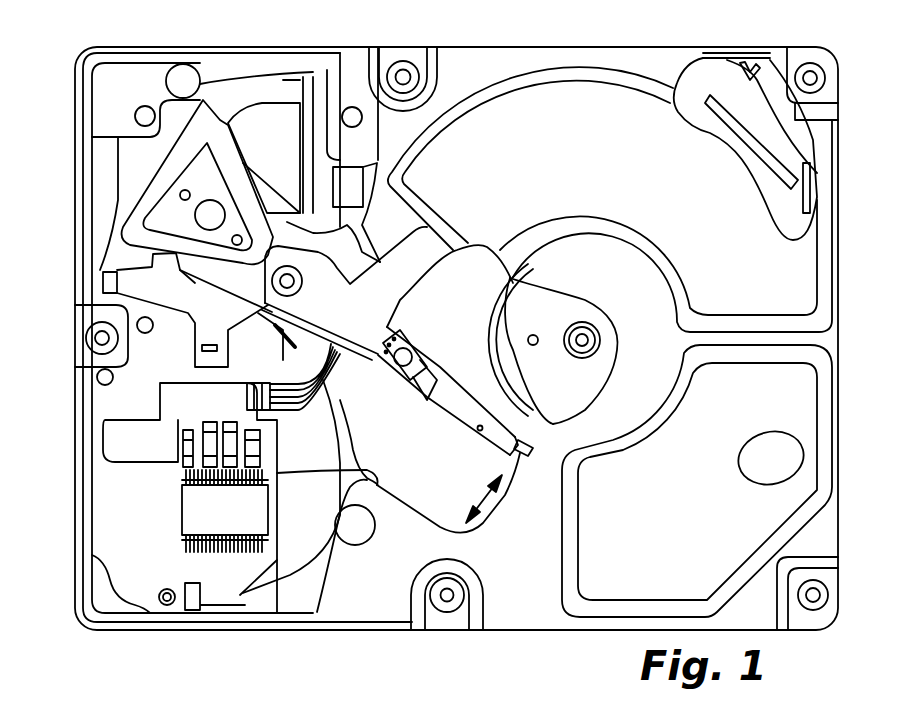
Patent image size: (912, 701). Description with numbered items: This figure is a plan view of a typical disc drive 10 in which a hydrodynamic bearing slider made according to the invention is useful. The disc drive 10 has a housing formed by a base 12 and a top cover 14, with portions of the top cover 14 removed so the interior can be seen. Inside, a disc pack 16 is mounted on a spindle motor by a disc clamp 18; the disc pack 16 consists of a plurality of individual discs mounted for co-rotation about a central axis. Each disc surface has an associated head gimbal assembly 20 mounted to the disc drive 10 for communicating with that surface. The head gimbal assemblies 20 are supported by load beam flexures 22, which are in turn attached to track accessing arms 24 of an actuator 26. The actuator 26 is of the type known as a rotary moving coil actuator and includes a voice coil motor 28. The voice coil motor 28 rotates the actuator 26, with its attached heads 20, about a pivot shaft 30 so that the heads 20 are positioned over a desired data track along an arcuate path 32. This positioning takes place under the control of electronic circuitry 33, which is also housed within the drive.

The disc drive 10 is at (478, 39).
The base 12 is at (193, 628).
The top cover 14 is at (836, 334).
The disc pack 16 is at (410, 495).
The disc clamp 18 is at (578, 378).
The head gimbal assembly 20 is at (520, 452).
The load beam flexure 22 is at (447, 400).
The track accessing arm 24 is at (354, 342).
The actuator 26 is at (358, 273).
The voice coil motor 28 is at (255, 105).
The pivot shaft 30 is at (297, 284).
The arcuate path 32 is at (495, 498).
The electronic circuitry 33 is at (114, 505).